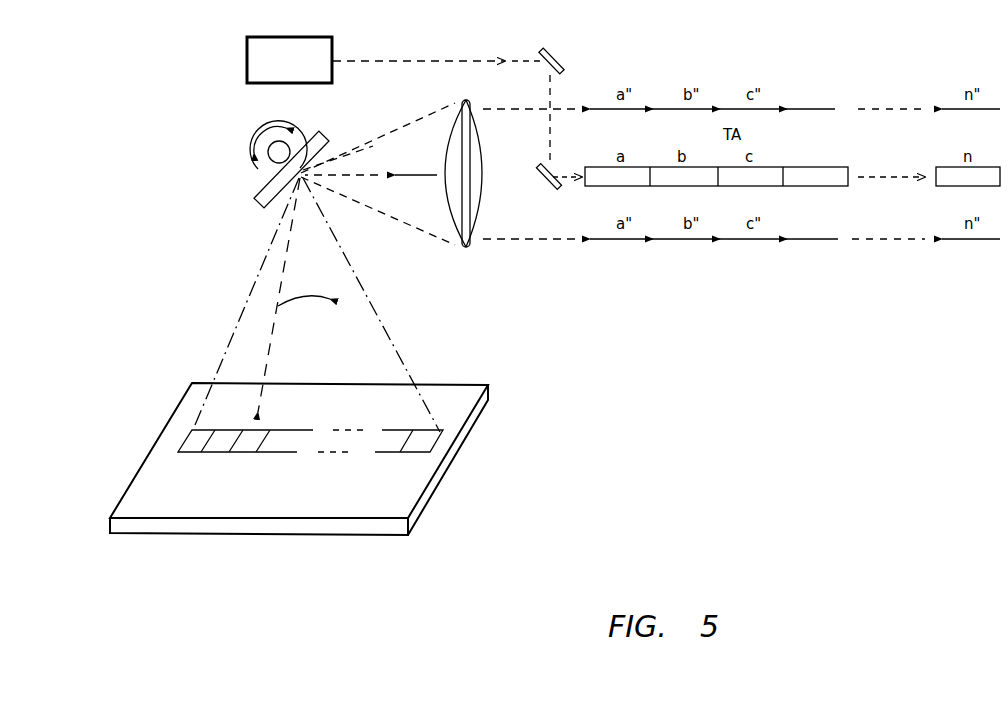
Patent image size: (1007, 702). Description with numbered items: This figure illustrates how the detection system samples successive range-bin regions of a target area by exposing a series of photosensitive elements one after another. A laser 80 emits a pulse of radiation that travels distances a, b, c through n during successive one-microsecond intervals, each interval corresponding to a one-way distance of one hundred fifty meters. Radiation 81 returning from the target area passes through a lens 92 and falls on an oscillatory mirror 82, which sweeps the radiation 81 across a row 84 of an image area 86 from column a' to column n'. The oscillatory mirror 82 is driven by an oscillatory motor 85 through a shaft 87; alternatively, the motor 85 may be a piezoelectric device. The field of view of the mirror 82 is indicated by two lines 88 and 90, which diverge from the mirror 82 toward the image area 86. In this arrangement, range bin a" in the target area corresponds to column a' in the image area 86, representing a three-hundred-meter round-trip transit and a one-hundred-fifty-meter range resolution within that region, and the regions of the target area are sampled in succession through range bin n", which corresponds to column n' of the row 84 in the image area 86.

The laser 80 is at (309, 37).
The radiation 81 is at (377, 173).
The oscillatory mirror 82 is at (323, 134).
The row 84 is at (184, 443).
The oscillatory motor 85 is at (294, 122).
The image area 86 is at (155, 467).
The shaft 87 is at (268, 156).
The field of view line 88 is at (253, 287).
The field of view line 90 is at (367, 295).
The lens 92 is at (465, 101).